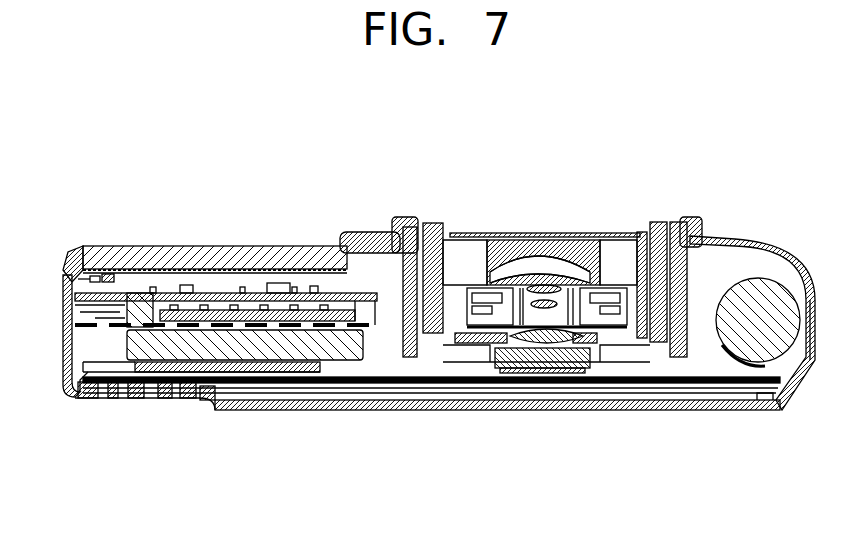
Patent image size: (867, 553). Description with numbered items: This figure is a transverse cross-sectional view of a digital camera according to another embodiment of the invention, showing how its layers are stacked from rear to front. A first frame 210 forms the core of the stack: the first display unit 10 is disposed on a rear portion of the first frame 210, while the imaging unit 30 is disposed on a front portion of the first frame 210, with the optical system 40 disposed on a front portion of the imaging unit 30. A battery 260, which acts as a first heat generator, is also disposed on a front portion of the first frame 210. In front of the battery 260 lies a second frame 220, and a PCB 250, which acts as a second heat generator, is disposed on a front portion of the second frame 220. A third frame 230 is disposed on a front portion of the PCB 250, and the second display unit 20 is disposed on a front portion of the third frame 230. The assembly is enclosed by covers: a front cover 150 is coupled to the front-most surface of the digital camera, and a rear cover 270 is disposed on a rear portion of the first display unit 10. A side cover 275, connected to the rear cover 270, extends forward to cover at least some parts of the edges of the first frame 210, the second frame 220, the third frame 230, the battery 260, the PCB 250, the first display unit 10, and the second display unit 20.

The first display unit 10 is at (665, 396).
The second display unit 20 is at (254, 262).
The imaging unit 30 is at (537, 365).
The optical system 40 is at (563, 230).
The front cover 150 is at (93, 245).
The first frame 210 is at (780, 396).
The second frame 220 is at (118, 337).
The third frame 230 is at (101, 279).
The PCB 250 is at (158, 290).
The battery 260 is at (290, 348).
The rear cover 270 is at (220, 415).
The side cover 275 is at (68, 378).